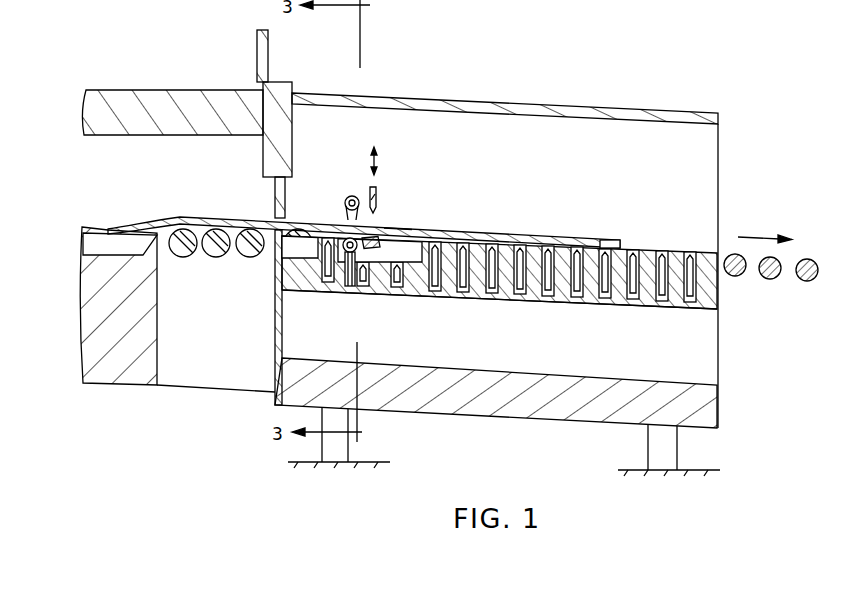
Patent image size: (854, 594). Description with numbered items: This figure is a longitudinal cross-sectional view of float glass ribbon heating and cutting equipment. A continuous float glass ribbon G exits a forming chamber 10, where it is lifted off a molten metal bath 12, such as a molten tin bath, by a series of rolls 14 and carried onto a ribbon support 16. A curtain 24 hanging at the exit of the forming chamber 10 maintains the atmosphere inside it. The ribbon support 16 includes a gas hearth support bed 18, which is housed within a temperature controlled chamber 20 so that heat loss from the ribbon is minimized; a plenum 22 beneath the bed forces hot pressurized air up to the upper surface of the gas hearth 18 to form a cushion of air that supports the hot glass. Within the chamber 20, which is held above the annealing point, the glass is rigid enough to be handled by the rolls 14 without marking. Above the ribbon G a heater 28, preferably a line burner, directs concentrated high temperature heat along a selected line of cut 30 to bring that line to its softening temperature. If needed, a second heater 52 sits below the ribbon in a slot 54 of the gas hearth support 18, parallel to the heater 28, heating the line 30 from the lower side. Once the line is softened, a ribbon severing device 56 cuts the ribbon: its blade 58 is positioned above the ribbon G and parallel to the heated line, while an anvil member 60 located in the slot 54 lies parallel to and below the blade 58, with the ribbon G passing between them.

The forming chamber 10 is at (167, 90).
The molten metal bath 12 is at (90, 245).
The rolls 14 is at (264, 257).
The ribbon support 16 is at (718, 292).
The gas hearth support bed 18 is at (430, 293).
The temperature controlled chamber 20 is at (605, 109).
The plenum 22 is at (706, 338).
The curtain 24 is at (275, 195).
The heater 28 is at (349, 197).
The line of cut 30 is at (346, 238).
The second heater 52 is at (351, 286).
The slot 54 is at (388, 260).
The ribbon severing device 56 is at (402, 196).
The blade 58 is at (377, 188).
The anvil member 60 is at (378, 237).
The float glass ribbon G is at (535, 238).